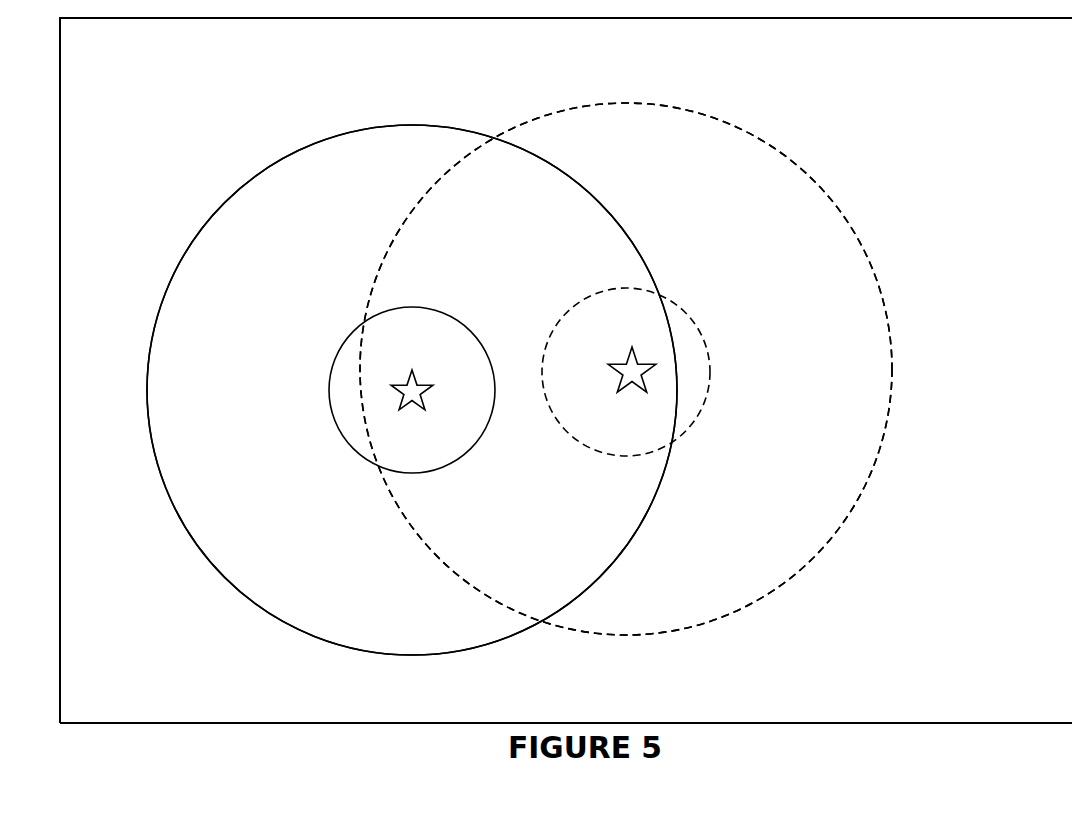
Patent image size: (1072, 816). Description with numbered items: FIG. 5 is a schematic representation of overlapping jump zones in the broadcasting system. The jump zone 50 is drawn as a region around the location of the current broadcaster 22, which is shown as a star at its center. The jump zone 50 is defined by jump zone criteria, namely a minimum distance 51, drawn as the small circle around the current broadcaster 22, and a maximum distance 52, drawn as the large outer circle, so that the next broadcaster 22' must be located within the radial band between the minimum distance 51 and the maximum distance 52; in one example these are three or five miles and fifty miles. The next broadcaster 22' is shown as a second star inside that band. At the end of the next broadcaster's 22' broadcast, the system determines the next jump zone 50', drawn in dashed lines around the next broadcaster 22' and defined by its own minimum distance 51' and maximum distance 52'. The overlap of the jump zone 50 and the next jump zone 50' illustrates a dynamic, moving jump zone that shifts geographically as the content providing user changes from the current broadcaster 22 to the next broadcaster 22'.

The jump zone 50 is at (412, 370).
The maximum distance 52 is at (410, 390).
The minimum distance 51 is at (384, 388).
The current broadcaster 22 is at (347, 398).
The next jump zone 50' is at (626, 360).
The maximum distance 52' is at (629, 369).
The minimum distance 51' is at (637, 349).
The next broadcaster 22' is at (703, 369).